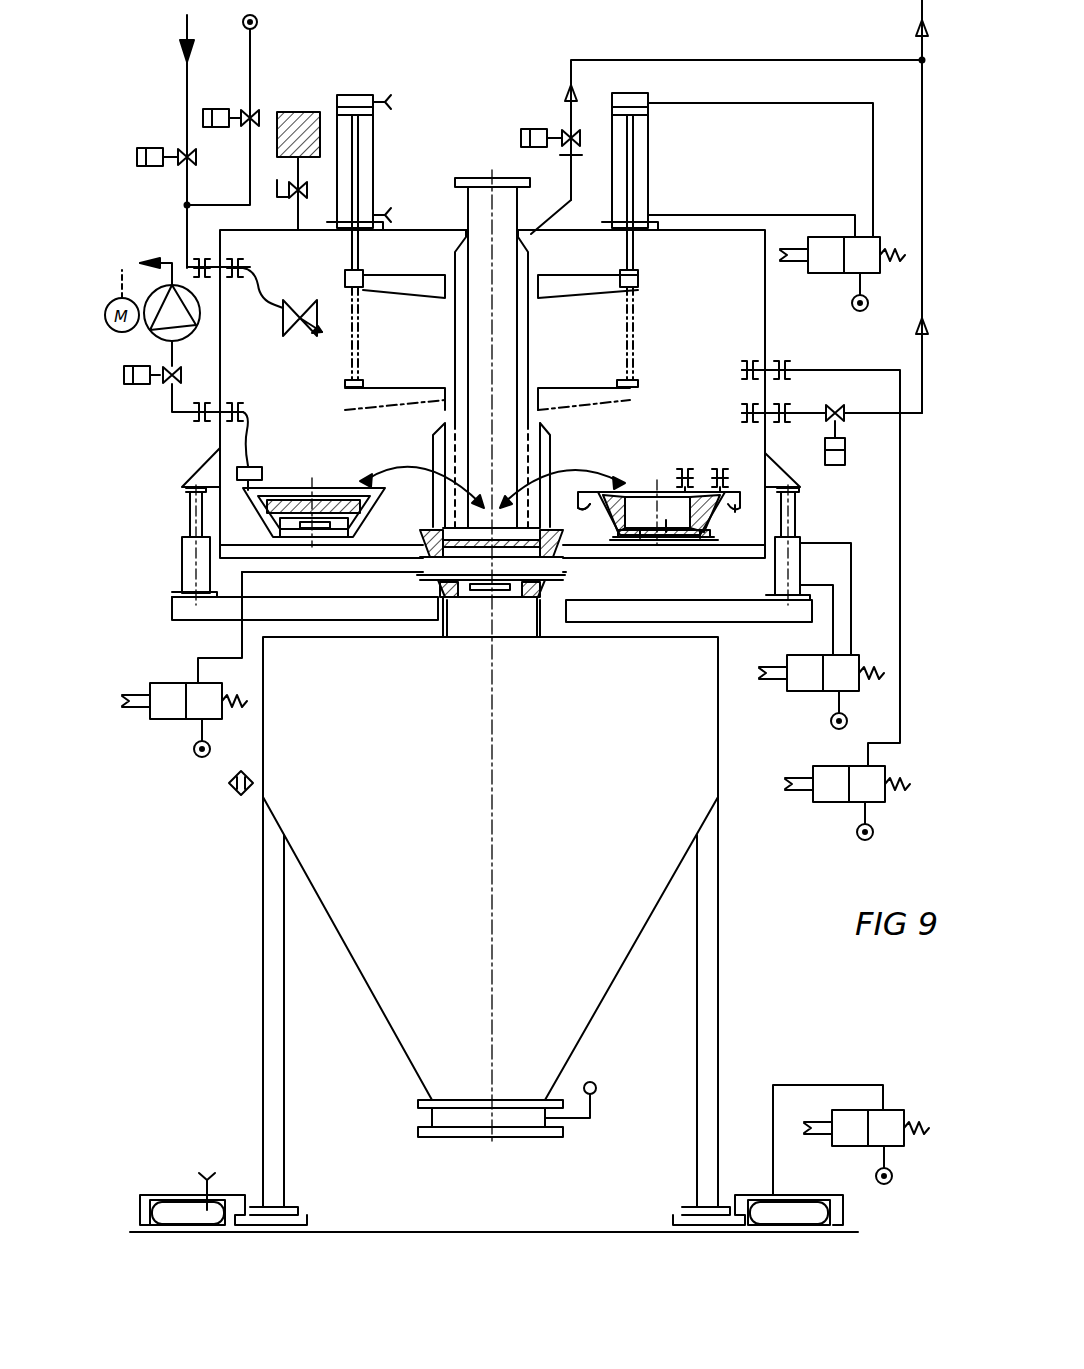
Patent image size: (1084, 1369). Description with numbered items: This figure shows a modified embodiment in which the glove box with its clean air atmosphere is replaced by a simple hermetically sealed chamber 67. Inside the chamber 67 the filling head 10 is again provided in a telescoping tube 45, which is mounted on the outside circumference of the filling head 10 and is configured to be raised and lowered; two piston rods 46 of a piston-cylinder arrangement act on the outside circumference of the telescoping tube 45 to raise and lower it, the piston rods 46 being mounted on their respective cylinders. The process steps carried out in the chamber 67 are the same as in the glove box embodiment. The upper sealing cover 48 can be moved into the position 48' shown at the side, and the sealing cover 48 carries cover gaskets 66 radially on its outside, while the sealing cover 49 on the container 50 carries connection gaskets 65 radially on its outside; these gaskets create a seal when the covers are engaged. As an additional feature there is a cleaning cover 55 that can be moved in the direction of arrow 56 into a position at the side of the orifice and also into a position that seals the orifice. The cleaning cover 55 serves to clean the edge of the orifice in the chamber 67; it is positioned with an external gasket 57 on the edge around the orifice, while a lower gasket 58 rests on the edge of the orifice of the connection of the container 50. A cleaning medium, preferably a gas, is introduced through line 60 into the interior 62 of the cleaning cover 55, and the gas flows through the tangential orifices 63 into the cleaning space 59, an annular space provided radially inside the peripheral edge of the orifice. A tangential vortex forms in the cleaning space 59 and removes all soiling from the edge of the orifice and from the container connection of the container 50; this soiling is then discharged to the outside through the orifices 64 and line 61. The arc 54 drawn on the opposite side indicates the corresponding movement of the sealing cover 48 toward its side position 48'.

The filling head 10 is at (532, 271).
The telescoping tube 45 is at (538, 352).
The piston rods 46 is at (640, 245).
The upper sealing cover 48 is at (512, 560).
The position of the upper sealing cover 48' is at (314, 483).
The sealing cover 49 is at (482, 598).
The container 50 is at (700, 742).
The flow path arrow 54 is at (408, 472).
The cleaning cover 55 is at (628, 492).
The arrow 56 is at (577, 472).
The external gasket 57 is at (790, 502).
The lower gasket 58 is at (650, 540).
The cleaning space 59 is at (590, 504).
The line 60 is at (720, 468).
The line 61 is at (920, 358).
The interior of cleaning cover 62 is at (668, 530).
The tangential orifices 63 is at (706, 542).
The orifices 64 is at (742, 512).
The connection gaskets 65 is at (420, 582).
The cover gaskets 66 is at (280, 528).
The chamber 67 is at (768, 316).